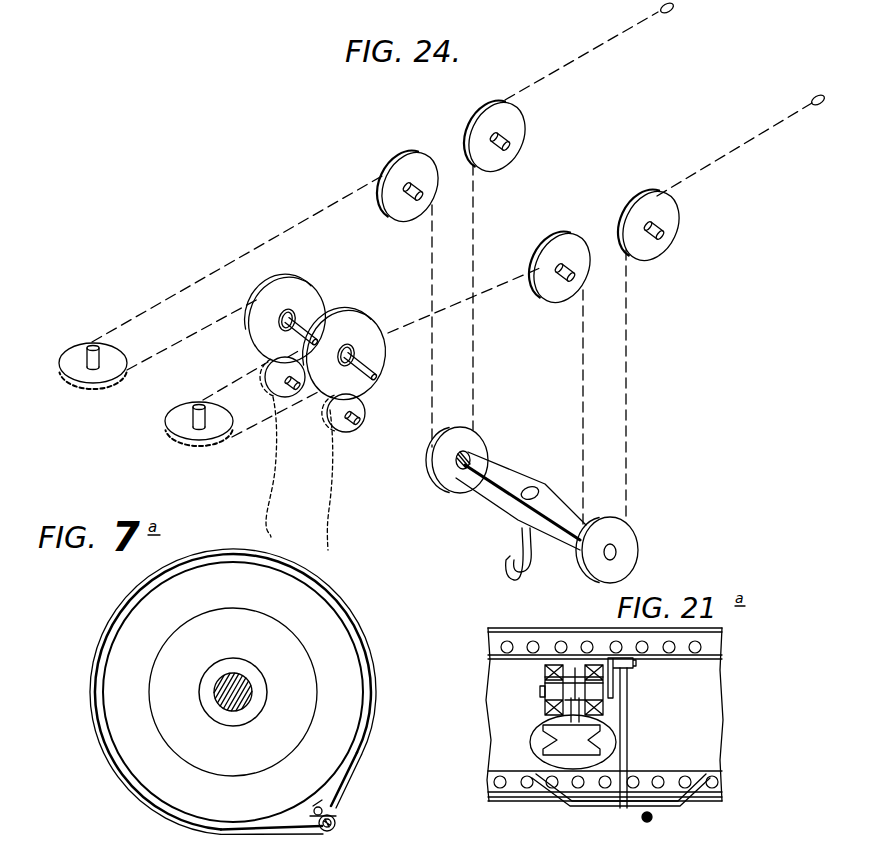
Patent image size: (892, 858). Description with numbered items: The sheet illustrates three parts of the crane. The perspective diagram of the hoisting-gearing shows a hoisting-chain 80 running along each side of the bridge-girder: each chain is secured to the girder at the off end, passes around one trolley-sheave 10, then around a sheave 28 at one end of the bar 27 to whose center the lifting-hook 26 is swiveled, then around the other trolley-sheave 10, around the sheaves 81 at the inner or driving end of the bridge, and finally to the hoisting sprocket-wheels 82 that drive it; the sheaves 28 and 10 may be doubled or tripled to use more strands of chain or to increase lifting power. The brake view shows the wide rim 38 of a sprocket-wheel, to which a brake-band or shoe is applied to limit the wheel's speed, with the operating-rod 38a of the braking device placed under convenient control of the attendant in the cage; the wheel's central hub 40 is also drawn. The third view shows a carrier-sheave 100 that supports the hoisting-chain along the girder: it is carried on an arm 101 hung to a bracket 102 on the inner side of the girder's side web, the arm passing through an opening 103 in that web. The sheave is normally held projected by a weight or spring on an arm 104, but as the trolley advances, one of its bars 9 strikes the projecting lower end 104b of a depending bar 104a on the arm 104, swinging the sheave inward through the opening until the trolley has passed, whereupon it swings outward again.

In FIG. 24, the hoisting-chain 80 is at (459, 219).
In FIG. 24, the trolley-sheave 10 is at (530, 309).
In FIG. 24, the sheave 81 is at (146, 394).
In FIG. 24, the hoisting sprocket-wheel 82 is at (317, 409).
In FIG. 24, the sheave 28 is at (468, 440).
In FIG. 24, the bar 27 is at (523, 485).
In FIG. 24, the lifting-hook 26 is at (507, 554).
In FIG. 7A, the wide rim 38 is at (168, 580).
In FIG. 7A, the hub shaft 40 is at (222, 692).
In FIG. 7A, the operating-rod 38a is at (335, 823).
In FIG. 21A, the bar 9 is at (651, 821).
In FIG. 21A, the carrier-sheave 100 is at (571, 740).
In FIG. 21A, the arm 101 is at (577, 686).
In FIG. 21A, the bracket 102 is at (548, 697).
In FIG. 21A, the opening 103 is at (538, 743).
In FIG. 21A, the arm 104 is at (615, 685).
In FIG. 21A, the depending bar 104a is at (627, 742).
In FIG. 21A, the projecting lower end 104b is at (577, 810).